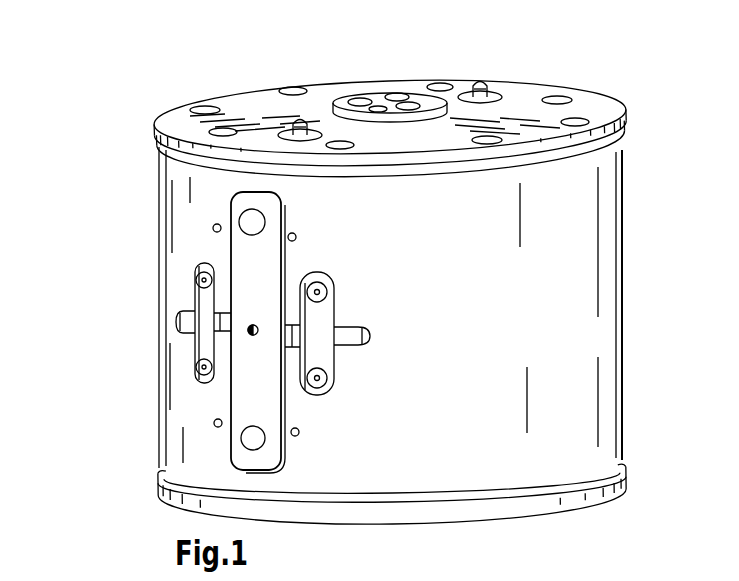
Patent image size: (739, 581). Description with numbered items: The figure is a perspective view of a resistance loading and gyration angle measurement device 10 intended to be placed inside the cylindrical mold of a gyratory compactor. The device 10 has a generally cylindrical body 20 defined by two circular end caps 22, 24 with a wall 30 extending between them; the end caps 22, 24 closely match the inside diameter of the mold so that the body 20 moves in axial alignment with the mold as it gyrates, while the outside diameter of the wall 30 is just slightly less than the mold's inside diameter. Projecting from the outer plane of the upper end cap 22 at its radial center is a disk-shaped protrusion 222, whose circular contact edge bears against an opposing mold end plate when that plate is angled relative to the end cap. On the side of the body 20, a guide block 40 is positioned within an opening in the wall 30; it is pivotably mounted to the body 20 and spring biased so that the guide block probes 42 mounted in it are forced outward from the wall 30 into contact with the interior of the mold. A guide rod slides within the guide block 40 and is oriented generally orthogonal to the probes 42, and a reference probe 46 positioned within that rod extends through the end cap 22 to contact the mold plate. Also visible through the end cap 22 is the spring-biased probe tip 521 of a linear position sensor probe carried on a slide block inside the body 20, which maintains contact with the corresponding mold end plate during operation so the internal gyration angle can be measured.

The internal loading and internal gyration angle measurement device 10 is at (657, 108).
The cylindrical body 20 is at (623, 285).
The end cap 22 is at (253, 98).
The end cap 24 is at (557, 502).
The wall 30 is at (577, 393).
The guide block 40 is at (247, 392).
The guide block probes 42 is at (253, 225).
The reference probe 46 is at (300, 118).
The protrusion 222 is at (407, 99).
The probe tip 521 is at (480, 81).